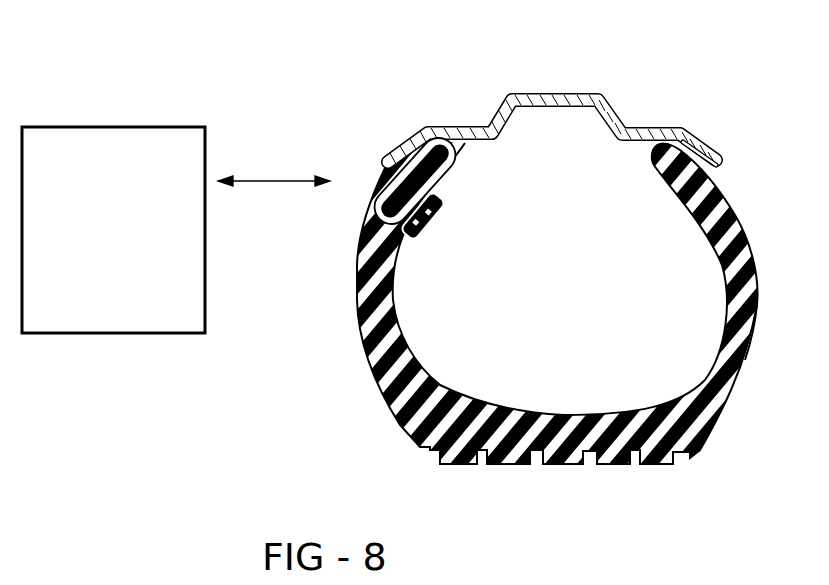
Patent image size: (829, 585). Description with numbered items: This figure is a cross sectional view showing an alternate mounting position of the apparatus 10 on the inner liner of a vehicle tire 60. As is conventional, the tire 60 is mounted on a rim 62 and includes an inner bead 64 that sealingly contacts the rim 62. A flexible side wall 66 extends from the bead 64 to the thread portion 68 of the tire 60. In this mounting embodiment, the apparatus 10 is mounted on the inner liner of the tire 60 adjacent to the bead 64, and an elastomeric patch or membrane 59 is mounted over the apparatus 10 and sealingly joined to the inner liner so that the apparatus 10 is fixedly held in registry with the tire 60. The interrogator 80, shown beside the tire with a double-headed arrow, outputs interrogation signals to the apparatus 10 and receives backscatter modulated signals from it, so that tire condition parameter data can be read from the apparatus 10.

The apparatus 10 is at (410, 198).
The elastomeric patch or membrane 59 is at (407, 220).
The vehicle tire 60 is at (752, 238).
The rim 62 is at (600, 100).
The inner bead 64 is at (678, 135).
The side wall 66 is at (752, 338).
The thread portion 68 is at (627, 455).
The interrogator 80 is at (103, 131).